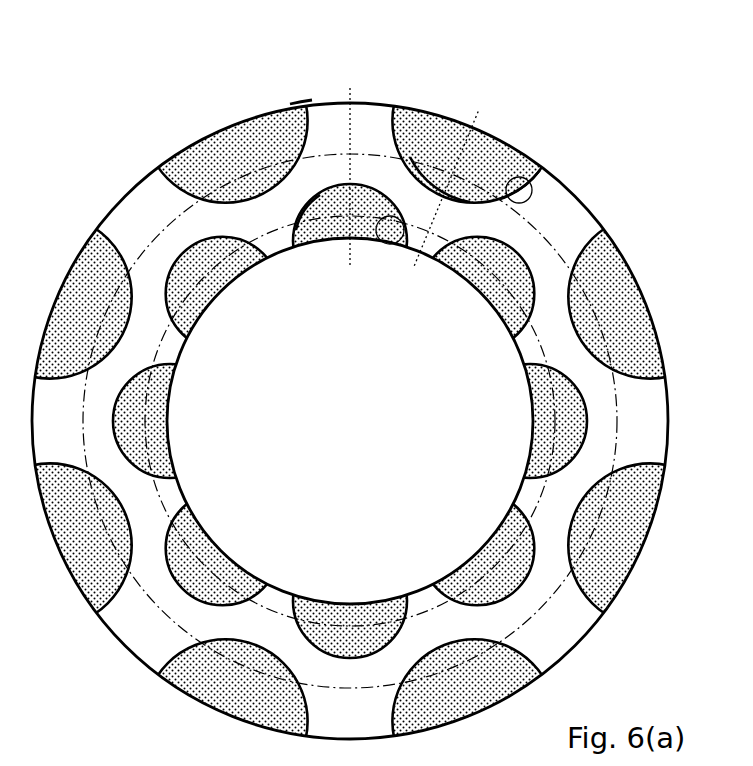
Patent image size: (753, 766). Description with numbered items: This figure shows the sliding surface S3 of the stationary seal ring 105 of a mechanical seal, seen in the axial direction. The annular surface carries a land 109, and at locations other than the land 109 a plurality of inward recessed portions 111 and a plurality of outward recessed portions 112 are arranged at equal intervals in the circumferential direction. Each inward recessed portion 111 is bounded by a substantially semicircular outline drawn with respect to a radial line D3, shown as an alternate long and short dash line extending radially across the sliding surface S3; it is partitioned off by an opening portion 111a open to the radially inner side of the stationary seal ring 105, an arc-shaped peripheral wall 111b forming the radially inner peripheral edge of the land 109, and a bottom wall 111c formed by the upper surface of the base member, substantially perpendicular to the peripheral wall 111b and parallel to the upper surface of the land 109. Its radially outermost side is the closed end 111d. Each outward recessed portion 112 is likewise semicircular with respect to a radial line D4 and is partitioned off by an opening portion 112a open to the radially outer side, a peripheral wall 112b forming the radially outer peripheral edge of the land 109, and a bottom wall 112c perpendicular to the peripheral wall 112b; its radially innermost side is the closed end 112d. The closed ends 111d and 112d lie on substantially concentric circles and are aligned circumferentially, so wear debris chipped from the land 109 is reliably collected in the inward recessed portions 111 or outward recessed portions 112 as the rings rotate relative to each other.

The stationary seal ring 105 is at (223, 112).
The land 109 is at (143, 214).
The outward recessed portions 112 is at (409, 92).
The opening portion 112a is at (440, 172).
The peripheral wall 112b is at (532, 189).
The bottom wall 112c is at (507, 156).
The closed end 112d is at (468, 196).
The inward recessed portions 111 is at (306, 258).
The opening portion 111a is at (373, 243).
The peripheral wall 111b is at (405, 246).
The bottom wall 111c is at (318, 243).
The closed end 111d is at (357, 205).
The sliding surface S3 is at (297, 94).
The radial line D3 is at (352, 162).
The radial line D4 is at (454, 177).